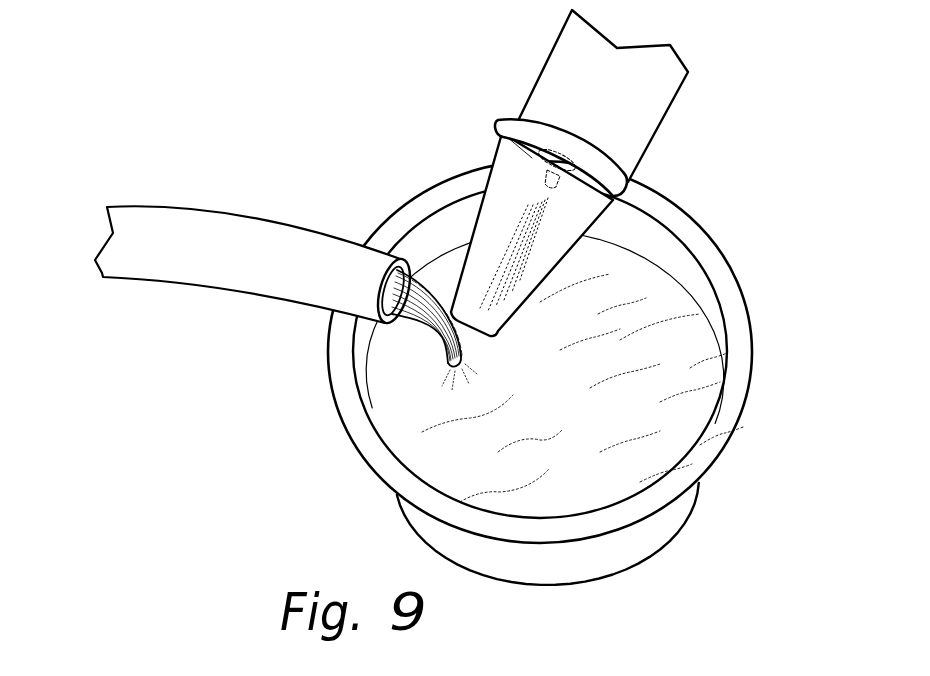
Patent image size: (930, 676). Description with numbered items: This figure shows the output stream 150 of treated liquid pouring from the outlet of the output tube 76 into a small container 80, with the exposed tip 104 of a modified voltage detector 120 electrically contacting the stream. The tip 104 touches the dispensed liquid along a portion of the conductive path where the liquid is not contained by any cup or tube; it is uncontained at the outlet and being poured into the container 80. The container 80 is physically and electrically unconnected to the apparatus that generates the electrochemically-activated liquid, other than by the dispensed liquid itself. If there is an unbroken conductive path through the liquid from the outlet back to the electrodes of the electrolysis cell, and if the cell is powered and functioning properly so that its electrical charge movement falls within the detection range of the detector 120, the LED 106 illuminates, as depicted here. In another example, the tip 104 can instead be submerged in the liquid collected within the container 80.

The output tube 76 is at (323, 267).
The container 80 is at (628, 543).
The exposed tip 104 is at (466, 355).
The LED 106 is at (610, 193).
The detector 120 is at (614, 129).
The output stream 150 is at (403, 313).